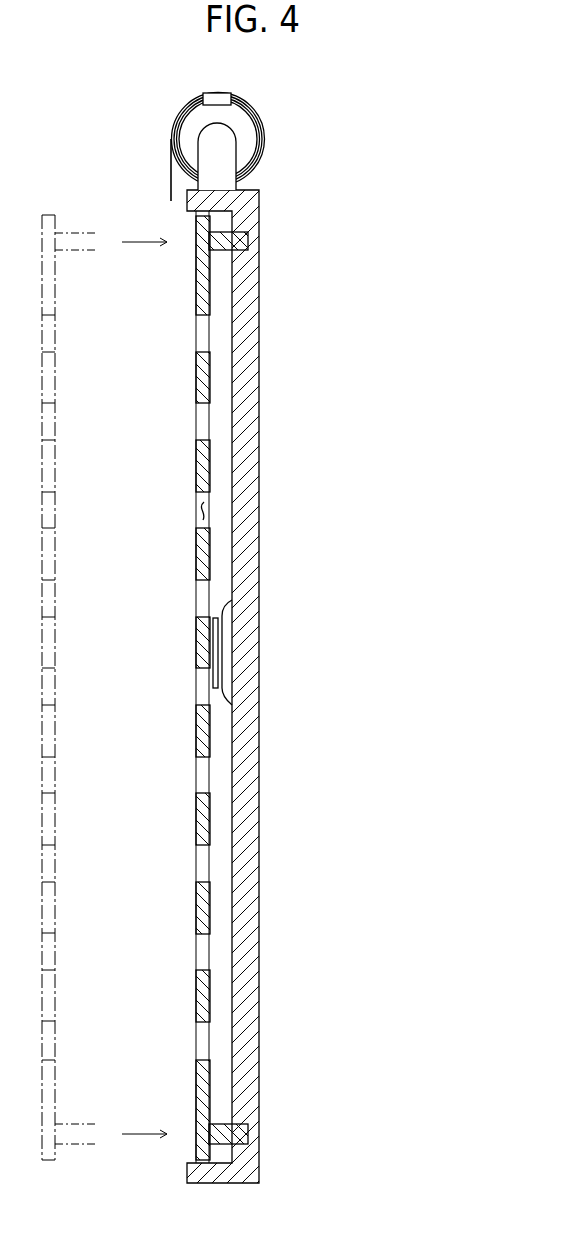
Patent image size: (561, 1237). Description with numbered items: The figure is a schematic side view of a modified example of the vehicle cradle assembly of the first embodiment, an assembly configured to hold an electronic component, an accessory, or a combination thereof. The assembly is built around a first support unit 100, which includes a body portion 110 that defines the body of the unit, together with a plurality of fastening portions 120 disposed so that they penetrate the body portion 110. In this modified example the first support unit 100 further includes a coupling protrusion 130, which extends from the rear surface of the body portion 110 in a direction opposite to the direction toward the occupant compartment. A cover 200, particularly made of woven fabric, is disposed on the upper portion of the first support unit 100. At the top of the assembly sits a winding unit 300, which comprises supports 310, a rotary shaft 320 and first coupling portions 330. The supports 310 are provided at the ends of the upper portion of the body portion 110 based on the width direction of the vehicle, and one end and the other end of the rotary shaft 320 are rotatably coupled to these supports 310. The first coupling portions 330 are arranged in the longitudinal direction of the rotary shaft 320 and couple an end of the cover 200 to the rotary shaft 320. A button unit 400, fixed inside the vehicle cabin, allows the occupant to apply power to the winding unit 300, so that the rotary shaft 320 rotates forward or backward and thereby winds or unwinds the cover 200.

The first support unit 100 is at (329, 686).
The body portion 110 is at (209, 376).
The fastening portion 120 is at (206, 507).
The coupling protrusion 130 is at (248, 250).
The cover 200 is at (170, 173).
The winding unit 300 is at (322, 119).
The support 310 is at (233, 153).
The rotary shaft 320 is at (260, 126).
The first coupling portion 330 is at (226, 93).
The button unit 400 is at (222, 652).